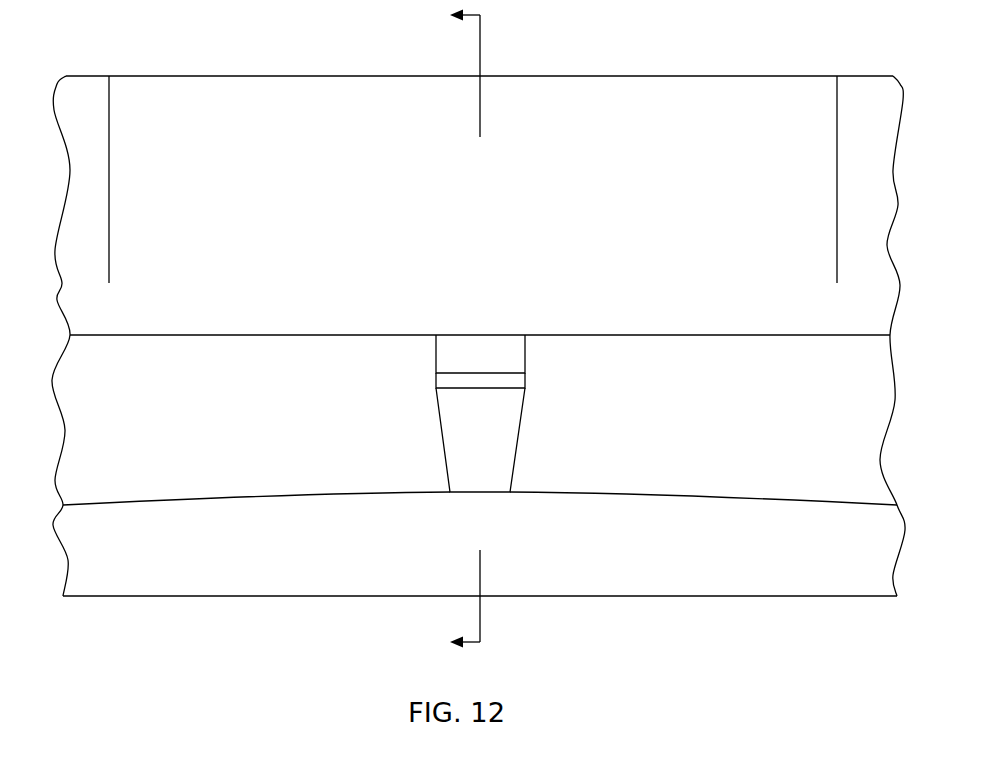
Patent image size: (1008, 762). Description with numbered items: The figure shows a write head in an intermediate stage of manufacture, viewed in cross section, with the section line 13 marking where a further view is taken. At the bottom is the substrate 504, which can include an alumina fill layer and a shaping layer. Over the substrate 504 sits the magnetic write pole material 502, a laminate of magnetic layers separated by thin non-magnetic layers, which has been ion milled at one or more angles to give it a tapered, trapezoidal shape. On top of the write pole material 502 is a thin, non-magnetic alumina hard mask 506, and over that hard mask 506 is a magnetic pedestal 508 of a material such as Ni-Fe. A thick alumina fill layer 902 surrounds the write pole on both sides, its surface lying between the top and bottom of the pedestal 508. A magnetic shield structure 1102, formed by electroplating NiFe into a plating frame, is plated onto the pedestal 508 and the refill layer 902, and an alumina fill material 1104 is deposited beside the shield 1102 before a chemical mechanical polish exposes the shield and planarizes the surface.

The section line 13- 13 is at (450, 330).
The magnetic write pole material 502 is at (506, 418).
The substrate 504 is at (512, 530).
The hard mask 506 is at (513, 381).
The magnetic pedestal 508 is at (510, 359).
The alumina fill layer 902 is at (237, 395).
The magnetic shield structure 1102 is at (502, 171).
The fill material 1104 is at (93, 90).